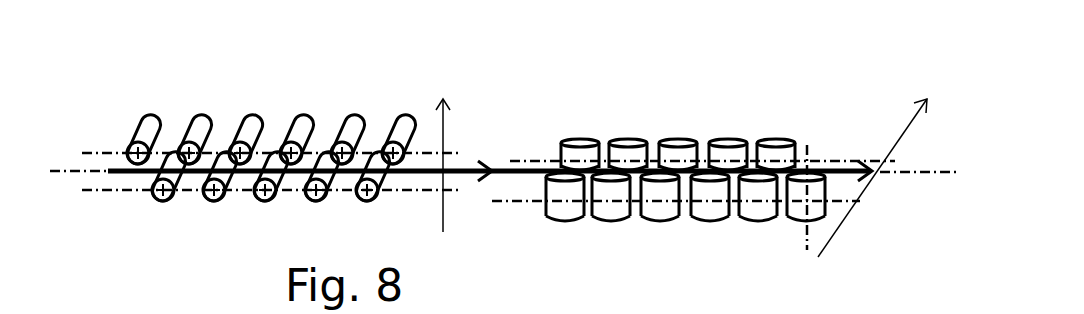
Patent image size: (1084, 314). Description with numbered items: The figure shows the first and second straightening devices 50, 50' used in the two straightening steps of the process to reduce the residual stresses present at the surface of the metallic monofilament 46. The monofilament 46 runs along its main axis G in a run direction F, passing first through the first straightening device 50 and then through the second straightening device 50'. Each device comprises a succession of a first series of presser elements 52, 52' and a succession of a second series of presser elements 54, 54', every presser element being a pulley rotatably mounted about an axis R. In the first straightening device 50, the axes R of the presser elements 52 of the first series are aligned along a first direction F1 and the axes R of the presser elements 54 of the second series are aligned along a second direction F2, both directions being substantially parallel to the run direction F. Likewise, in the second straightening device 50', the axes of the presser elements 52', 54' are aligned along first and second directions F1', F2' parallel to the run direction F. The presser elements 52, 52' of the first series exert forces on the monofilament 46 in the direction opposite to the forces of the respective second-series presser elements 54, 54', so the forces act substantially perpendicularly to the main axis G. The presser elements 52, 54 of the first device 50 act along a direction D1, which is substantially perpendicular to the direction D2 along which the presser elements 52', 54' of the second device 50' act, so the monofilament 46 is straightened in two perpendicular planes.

The metallic monofilament 46 is at (478, 178).
The first straightening device 50 is at (271, 161).
The presser elements of the first series of the first straightening device 52 is at (271, 103).
The presser elements of the second series of the first straightening device 54 is at (270, 223).
The second straightening device 50' is at (685, 174).
The presser elements of the first series of the second straightening device 52' is at (678, 115).
The presser elements of the second series of the second straightening device 54' is at (685, 242).
The main axis of the metallic monofilament G is at (58, 170).
The first direction F1 is at (270, 117).
The second direction F2 is at (270, 231).
The first direction of the second straightening device F1' is at (692, 126).
The second direction of the second straightening device F2' is at (671, 243).
The axis of rotation of the presser element R is at (340, 150).
The first force direction D1 is at (444, 150).
The second force direction D2 is at (879, 164).
The run direction of the metallic monofilament F is at (874, 204).